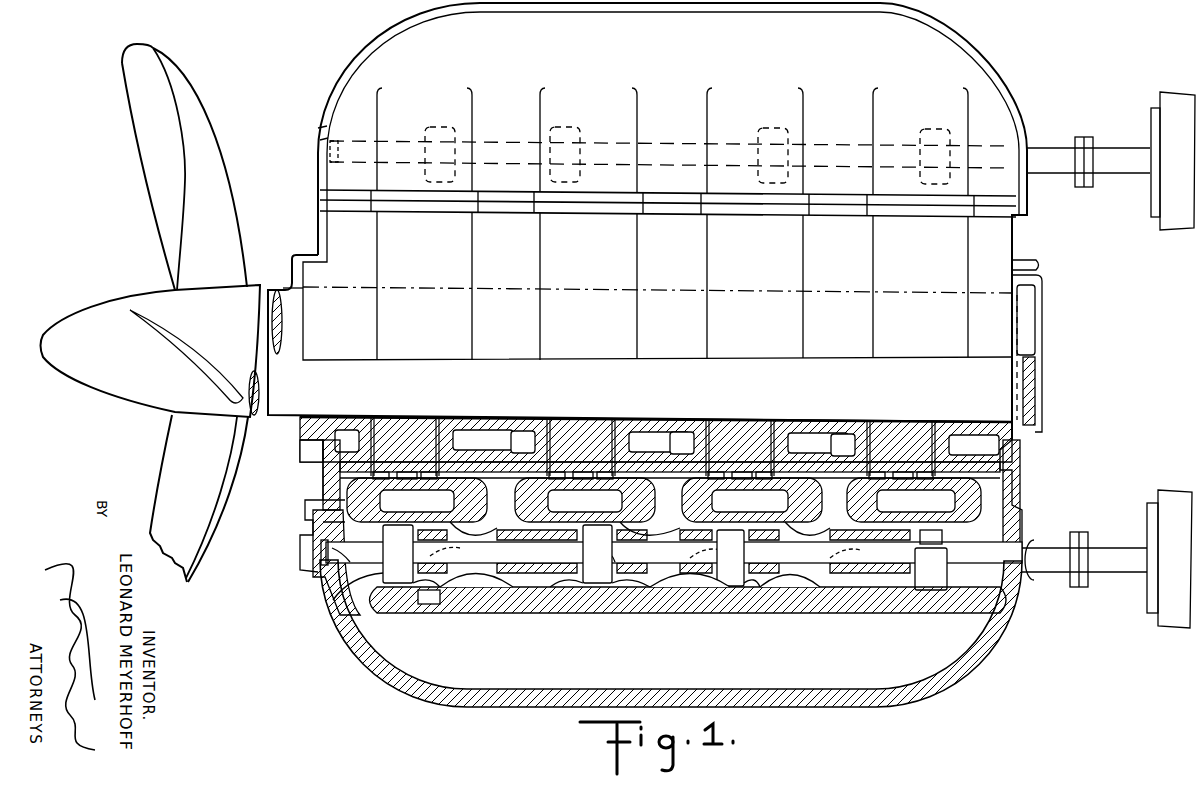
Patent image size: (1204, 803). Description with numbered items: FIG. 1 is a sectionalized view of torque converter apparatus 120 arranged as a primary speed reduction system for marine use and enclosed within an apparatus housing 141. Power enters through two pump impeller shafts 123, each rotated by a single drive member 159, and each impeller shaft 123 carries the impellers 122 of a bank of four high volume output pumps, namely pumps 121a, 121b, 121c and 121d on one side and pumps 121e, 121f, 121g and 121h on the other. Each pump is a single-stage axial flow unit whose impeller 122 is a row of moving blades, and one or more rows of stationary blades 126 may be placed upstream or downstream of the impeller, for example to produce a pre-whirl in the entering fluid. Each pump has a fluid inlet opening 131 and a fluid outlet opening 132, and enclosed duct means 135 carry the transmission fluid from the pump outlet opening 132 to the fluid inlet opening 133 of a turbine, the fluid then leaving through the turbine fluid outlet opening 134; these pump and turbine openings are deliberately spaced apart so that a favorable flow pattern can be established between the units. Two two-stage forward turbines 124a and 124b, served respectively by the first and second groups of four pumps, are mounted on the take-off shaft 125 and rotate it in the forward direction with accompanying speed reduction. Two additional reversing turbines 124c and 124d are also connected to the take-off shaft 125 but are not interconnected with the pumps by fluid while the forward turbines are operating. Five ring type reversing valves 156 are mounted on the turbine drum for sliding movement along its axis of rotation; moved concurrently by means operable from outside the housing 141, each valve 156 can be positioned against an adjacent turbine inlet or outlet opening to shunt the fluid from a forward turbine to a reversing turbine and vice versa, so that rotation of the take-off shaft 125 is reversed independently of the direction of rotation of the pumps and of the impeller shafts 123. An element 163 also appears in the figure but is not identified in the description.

The torque converter apparatus 120 is at (1047, 407).
The pump 121a is at (432, 583).
The pump 121b is at (437, 126).
The pump 121c is at (580, 130).
The pump 121d is at (580, 598).
The pump 121e is at (765, 598).
The pump 121f is at (766, 130).
The pump 121g is at (926, 132).
The pump 121h is at (937, 598).
The impeller 122 is at (468, 602).
The pump impeller shaft 123 is at (1000, 150).
The forward turbine 124a is at (416, 406).
The forward turbine 124b is at (760, 406).
The reversing turbine 124c is at (625, 406).
The reversing turbine 124d is at (945, 408).
The take-off shaft 125 is at (282, 287).
The stationary blades 126 is at (343, 588).
The pump fluid inlet opening 131 is at (330, 506).
The pump fluid outlet opening 132 is at (486, 500).
The turbine fluid inlet opening 133 is at (455, 468).
The turbine fluid outlet opening 134 is at (336, 473).
The enclosed duct means 135 is at (450, 590).
The apparatus housing 141 is at (992, 62).
The ring type reversing valve 156 is at (840, 480).
The drive member 159 is at (1170, 96).
The propeller 163 is at (156, 137).